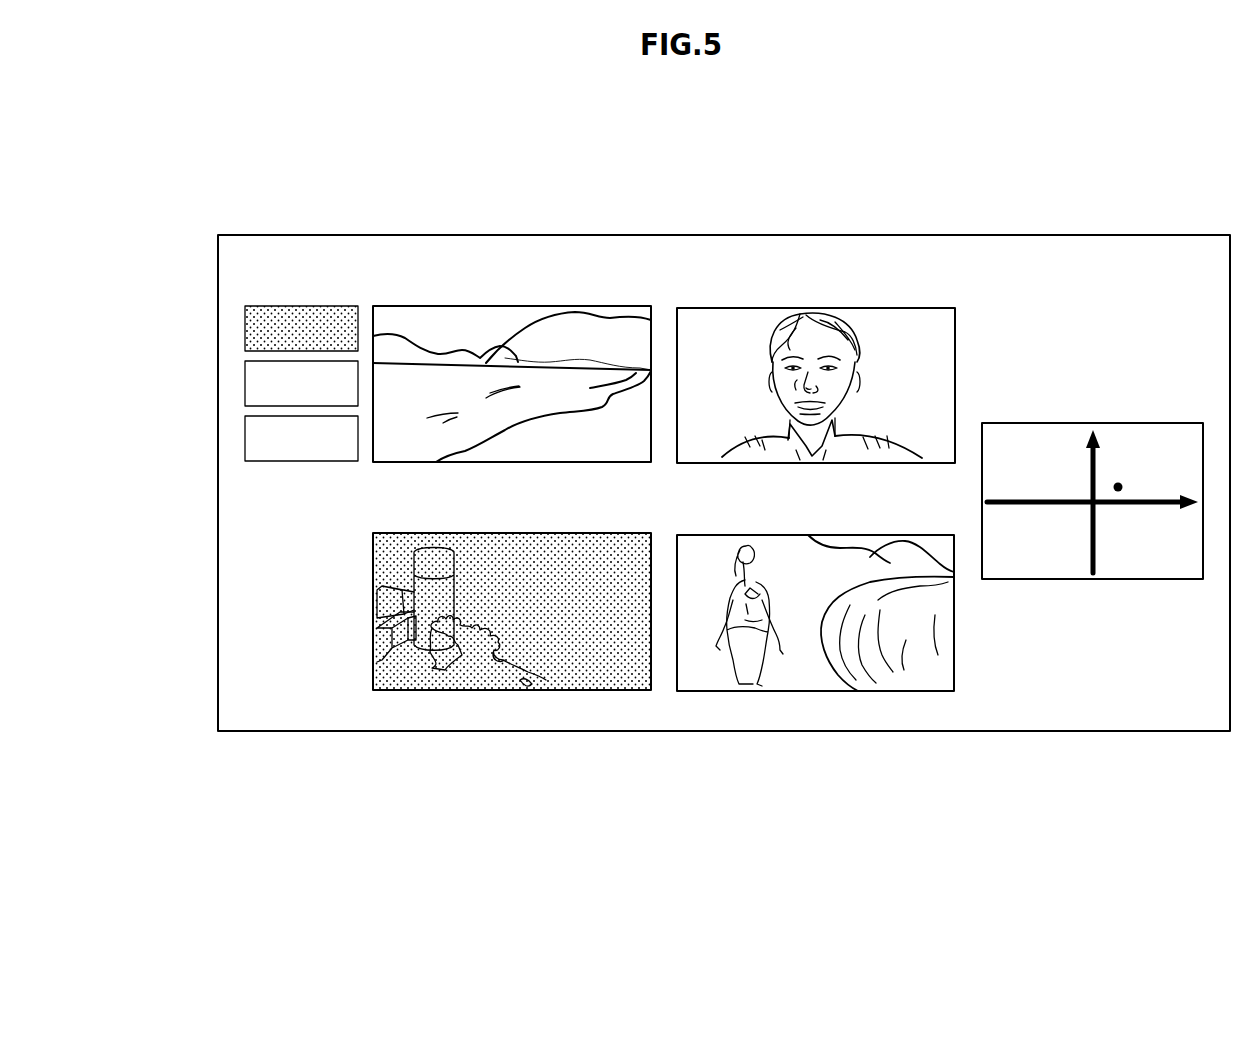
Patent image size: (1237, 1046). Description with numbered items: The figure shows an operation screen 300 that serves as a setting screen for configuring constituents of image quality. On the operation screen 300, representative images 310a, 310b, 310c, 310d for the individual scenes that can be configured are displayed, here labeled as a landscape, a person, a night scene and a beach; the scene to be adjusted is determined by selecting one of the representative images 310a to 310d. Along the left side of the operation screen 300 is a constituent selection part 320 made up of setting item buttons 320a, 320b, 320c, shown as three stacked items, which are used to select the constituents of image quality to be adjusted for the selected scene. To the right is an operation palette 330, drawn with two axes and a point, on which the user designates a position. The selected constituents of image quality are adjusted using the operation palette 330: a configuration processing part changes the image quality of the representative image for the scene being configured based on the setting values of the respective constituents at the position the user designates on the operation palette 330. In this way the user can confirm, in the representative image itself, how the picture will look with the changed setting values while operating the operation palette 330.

The operation screen 300 is at (1083, 235).
The representative image 310a is at (538, 306).
The representative image 310b is at (867, 308).
The representative image 310c is at (507, 690).
The representative image 310d is at (837, 691).
The constituent selection part 320 is at (209, 380).
The setting item button 320a is at (245, 323).
The setting item button 320b is at (245, 380).
The setting item button 320c is at (243, 436).
The operation palette 330 is at (1117, 579).